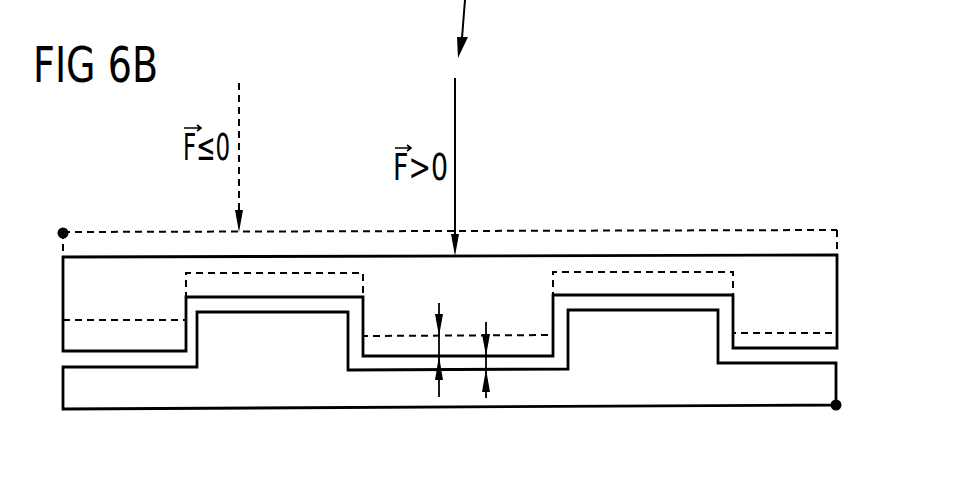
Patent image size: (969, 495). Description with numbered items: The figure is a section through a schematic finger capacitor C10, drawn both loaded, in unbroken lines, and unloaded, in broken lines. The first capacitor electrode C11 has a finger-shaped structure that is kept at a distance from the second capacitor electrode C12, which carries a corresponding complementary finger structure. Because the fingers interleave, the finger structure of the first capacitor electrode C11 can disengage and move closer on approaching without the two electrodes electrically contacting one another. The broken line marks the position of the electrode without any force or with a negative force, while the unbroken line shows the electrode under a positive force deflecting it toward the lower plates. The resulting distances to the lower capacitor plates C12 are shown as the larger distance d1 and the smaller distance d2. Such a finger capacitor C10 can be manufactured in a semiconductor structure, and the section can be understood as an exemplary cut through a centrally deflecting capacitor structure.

The finger capacitor C10 is at (655, 229).
The first capacitor electrode C11 is at (63, 228).
The second capacitor electrode C12 is at (838, 411).
The larger distance d1 is at (437, 344).
The smaller distance d2 is at (488, 357).